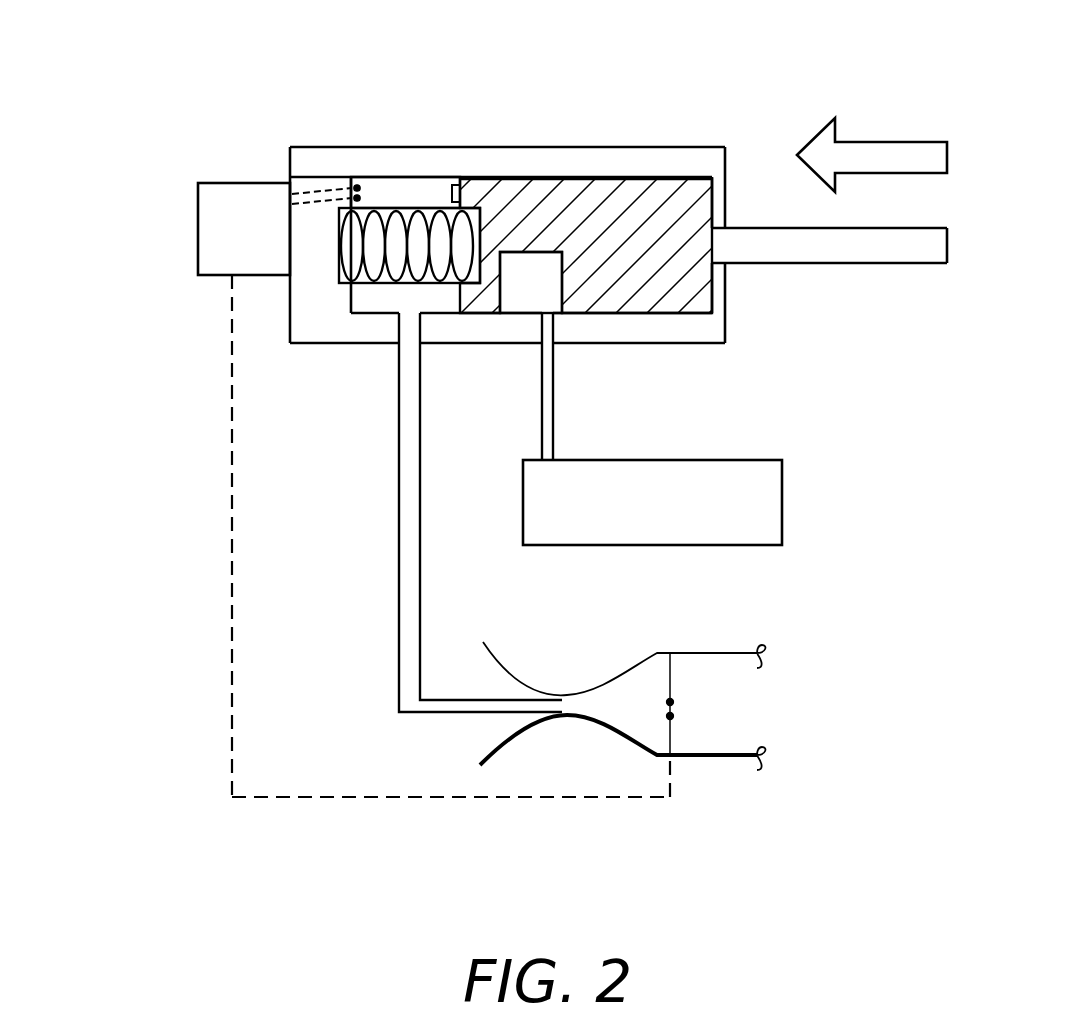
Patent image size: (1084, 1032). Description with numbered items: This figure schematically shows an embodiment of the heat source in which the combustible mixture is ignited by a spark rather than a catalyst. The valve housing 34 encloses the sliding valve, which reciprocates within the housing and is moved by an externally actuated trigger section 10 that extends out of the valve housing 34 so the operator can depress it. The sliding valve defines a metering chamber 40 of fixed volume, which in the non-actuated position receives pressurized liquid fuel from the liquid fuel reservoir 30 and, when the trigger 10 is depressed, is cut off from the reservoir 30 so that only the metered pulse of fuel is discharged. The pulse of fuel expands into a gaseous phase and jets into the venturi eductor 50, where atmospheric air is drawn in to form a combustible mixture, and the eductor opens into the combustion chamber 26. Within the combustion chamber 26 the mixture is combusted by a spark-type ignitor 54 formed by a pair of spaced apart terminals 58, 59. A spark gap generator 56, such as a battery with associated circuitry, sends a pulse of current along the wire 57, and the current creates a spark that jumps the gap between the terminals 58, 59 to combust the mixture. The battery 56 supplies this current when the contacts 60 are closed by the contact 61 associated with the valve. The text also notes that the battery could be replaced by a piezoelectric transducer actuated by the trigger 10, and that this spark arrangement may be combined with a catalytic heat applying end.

The trigger section 10 is at (858, 250).
The combustion chamber 26 is at (702, 677).
The liquid fuel reservoir 30 is at (768, 503).
The valve housing 34 is at (672, 330).
The metering chamber 40 is at (518, 285).
The venturi eductor 50 is at (562, 676).
The spark-type ignitor 54 is at (648, 722).
The spark gap generator 56 is at (217, 232).
The wire 57 is at (230, 497).
The first terminal 58 is at (690, 699).
The second terminal 59 is at (690, 720).
The contacts 60 is at (376, 177).
The contact 61 is at (452, 188).